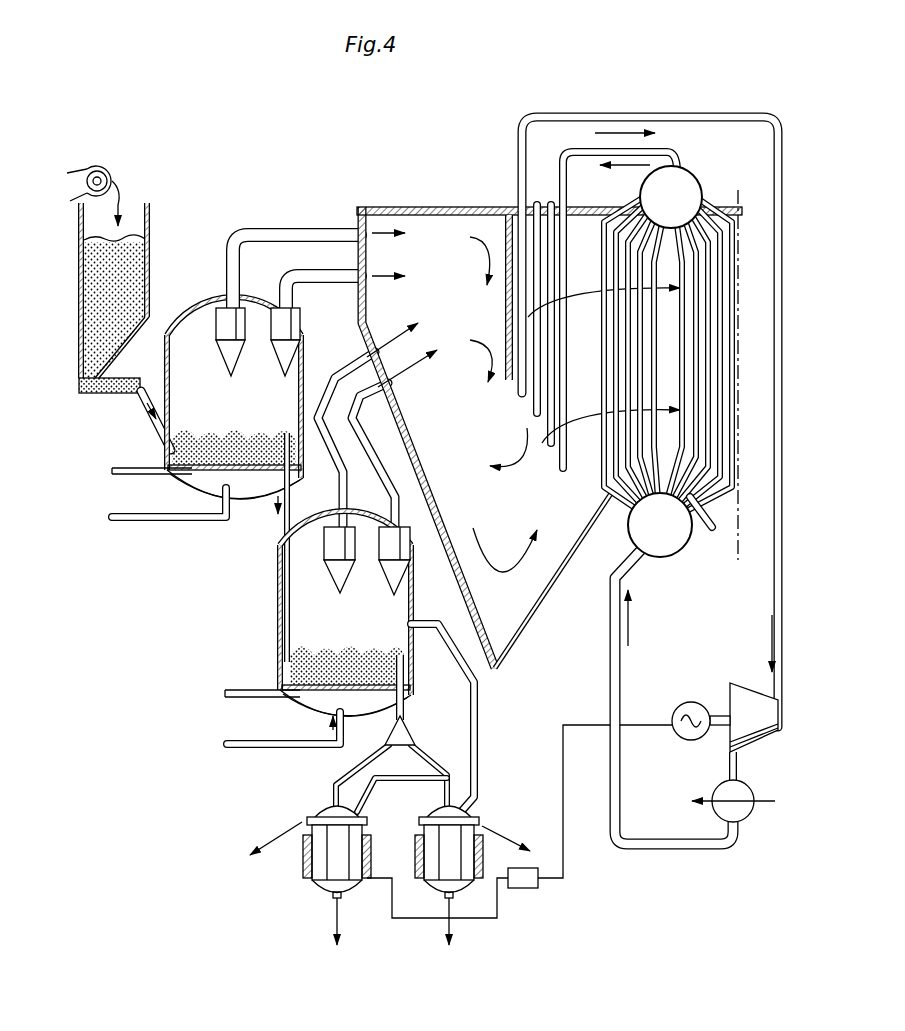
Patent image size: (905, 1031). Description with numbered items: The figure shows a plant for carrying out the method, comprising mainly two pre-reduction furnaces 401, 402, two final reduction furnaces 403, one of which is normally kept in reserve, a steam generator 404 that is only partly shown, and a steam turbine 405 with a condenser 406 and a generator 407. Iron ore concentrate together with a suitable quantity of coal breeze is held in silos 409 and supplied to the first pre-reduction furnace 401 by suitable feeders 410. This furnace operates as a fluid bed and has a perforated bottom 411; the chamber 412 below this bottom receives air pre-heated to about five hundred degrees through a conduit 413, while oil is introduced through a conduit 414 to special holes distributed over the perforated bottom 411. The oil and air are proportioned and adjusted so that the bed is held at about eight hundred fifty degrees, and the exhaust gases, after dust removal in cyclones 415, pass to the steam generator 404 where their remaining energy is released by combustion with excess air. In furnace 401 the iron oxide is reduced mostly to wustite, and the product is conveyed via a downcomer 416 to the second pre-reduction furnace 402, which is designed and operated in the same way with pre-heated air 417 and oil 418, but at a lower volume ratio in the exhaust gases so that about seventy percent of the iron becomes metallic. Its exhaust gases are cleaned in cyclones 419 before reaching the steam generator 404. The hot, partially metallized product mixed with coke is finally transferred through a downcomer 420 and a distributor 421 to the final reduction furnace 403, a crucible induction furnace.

The pre-reduction furnace 401 is at (254, 419).
The pre-reduction furnace 402 is at (362, 633).
The final reduction furnace 403 is at (358, 870).
The steam generator 404 is at (472, 430).
The steam turbine 405 is at (748, 690).
The condenser 406 is at (715, 792).
The generator 407 is at (695, 703).
The silos 409 is at (135, 306).
The feeders 410 is at (120, 396).
The perforated bottom 411 is at (286, 480).
The chamber 412 is at (256, 494).
The conduit 413 is at (152, 513).
The conduit 414 is at (140, 466).
The cyclones 415 is at (220, 333).
The downcomer 416 is at (284, 522).
The pre-heated air 417 is at (228, 742).
The oil 418 is at (226, 690).
The cyclones 419 is at (392, 577).
The downcomer 420 is at (406, 712).
The distributor 421 is at (400, 742).